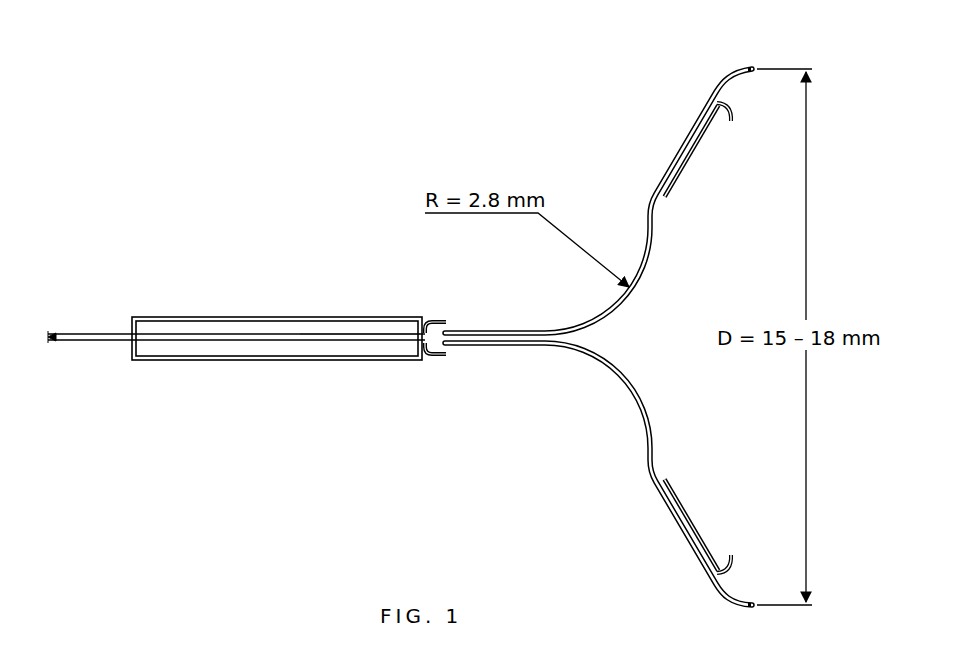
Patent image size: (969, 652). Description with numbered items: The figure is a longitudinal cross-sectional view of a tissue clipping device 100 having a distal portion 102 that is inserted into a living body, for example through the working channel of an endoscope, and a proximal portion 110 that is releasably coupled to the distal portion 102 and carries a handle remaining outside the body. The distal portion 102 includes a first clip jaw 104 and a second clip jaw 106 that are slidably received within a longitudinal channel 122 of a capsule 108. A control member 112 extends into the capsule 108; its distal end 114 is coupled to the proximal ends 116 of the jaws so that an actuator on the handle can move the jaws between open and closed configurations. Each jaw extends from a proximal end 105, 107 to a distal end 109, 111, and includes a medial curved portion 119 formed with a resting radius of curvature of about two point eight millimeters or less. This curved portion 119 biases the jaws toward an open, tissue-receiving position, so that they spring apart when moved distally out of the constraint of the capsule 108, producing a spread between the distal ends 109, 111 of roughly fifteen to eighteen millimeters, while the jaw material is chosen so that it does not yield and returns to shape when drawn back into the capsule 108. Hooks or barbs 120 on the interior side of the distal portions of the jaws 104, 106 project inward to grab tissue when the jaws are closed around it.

The device 100 is at (298, 166).
The distal portion 102 is at (278, 238).
The first clip jaw 104 is at (648, 200).
The proximal end of first clip jaw 105 is at (441, 320).
The second clip jaw 106 is at (648, 488).
The proximal end of second clip jaw 107 is at (440, 356).
The capsule 108 is at (237, 318).
The distal end of first clip jaw 109 is at (746, 68).
The proximal portion 110 is at (98, 334).
The distal end of second clip jaw 111 is at (722, 606).
The control member 112 is at (360, 318).
The distal end of control member 114 is at (412, 318).
The proximal ends of clip jaws 116 is at (420, 358).
The medial curved portion 119 is at (620, 296).
The barb 120 is at (730, 124).
The longitudinal channel 122 is at (182, 325).